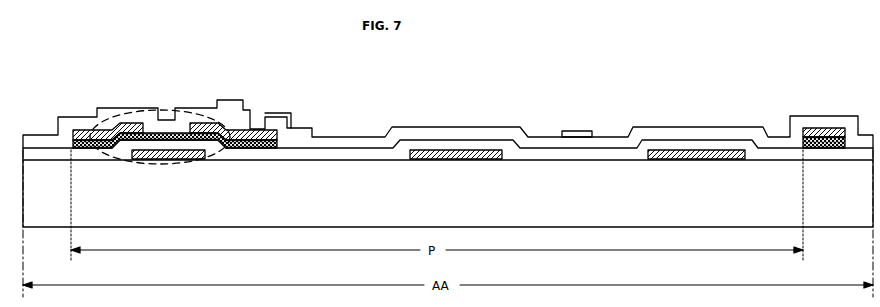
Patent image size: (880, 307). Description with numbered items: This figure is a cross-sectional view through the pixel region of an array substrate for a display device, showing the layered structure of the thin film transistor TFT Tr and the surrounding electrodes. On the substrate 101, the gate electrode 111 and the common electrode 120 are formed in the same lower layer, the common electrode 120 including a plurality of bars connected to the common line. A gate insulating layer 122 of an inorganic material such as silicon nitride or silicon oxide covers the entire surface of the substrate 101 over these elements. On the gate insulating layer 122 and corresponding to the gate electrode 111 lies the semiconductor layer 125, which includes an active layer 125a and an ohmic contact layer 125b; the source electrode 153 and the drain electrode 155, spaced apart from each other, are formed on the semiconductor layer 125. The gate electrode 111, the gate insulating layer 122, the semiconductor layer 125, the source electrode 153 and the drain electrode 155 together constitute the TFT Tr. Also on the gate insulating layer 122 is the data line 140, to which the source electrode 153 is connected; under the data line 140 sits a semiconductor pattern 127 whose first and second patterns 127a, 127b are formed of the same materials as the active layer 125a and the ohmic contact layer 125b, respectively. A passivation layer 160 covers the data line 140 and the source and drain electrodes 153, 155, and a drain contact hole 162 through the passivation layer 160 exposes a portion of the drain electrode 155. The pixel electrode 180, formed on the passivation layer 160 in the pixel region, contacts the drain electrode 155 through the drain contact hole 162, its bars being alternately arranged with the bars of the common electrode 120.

The substrate 101 is at (867, 222).
The gate electrode 111 is at (160, 162).
The common electrode 120 is at (455, 160).
The gate insulating layer 122 is at (352, 150).
The semiconductor layer 125 is at (258, 178).
The active layer 125a is at (240, 150).
The ohmic contact layer 125b is at (262, 150).
The semiconductor pattern 127 is at (835, 178).
The first pattern 127a is at (812, 150).
The second pattern 127b is at (838, 150).
The data line 140 is at (823, 128).
The source electrode 153 is at (124, 121).
The drain electrode 155 is at (198, 121).
The passivation layer 160 is at (333, 137).
The drain contact hole 162 is at (260, 103).
The pixel electrode 180 is at (286, 113).
The TFT Tr is at (123, 163).